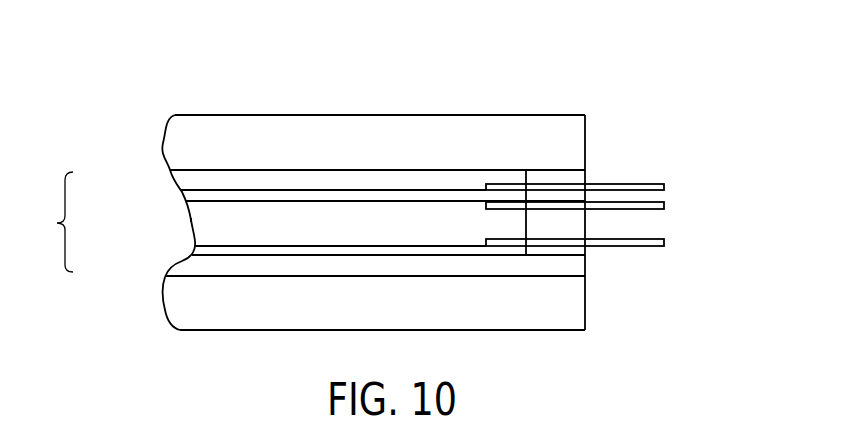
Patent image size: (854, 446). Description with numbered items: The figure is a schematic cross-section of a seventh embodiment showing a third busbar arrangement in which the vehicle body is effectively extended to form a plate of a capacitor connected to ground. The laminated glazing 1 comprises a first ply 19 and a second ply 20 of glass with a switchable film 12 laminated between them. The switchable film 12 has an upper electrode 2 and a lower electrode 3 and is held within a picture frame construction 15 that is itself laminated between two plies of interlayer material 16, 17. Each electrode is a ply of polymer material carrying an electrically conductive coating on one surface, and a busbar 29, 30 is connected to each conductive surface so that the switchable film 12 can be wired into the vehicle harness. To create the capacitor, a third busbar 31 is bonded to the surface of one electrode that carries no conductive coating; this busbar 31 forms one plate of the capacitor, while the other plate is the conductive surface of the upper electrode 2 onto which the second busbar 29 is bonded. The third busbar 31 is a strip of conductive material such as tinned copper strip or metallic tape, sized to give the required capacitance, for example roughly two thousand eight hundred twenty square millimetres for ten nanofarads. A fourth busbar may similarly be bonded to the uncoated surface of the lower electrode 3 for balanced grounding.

The laminated glazing 1 is at (514, 88).
The first ply of glass 19 is at (566, 137).
The ply of interlayer material 16 is at (566, 177).
The upper electrode 2 is at (197, 195).
The switchable film 12 is at (217, 220).
The lower electrode 3 is at (193, 250).
The picture frame construction 15 is at (51, 222).
The third busbar 31 is at (664, 190).
The second busbar 29 is at (664, 205).
The busbar 30 is at (664, 243).
The ply of interlayer material 17 is at (566, 267).
The second ply of glass 20 is at (566, 300).